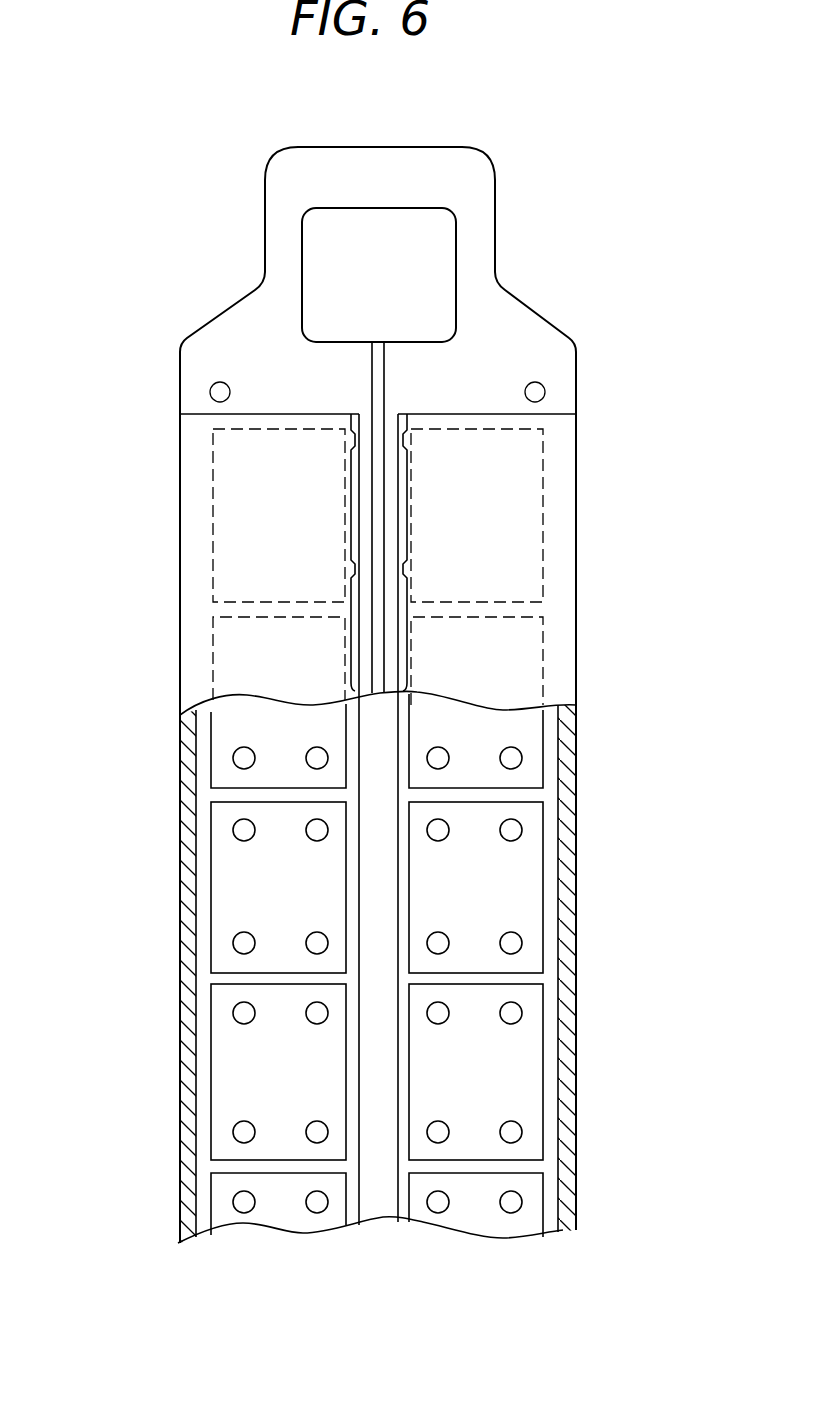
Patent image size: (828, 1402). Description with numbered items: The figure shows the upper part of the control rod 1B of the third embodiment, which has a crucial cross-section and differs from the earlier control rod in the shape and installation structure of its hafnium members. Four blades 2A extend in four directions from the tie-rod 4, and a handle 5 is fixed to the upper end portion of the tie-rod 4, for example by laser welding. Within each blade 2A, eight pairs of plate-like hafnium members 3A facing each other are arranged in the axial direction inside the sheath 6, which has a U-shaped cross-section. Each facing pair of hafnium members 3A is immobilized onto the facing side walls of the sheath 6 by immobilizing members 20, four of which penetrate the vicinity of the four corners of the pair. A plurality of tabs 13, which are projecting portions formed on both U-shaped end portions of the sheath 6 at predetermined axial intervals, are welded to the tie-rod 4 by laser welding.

The control rod 1B is at (552, 250).
The blade 2A is at (565, 803).
The hafnium member 3A is at (212, 740).
The tie-rod 4 is at (365, 653).
The handle 5 is at (267, 305).
The sheath 6 is at (558, 460).
The tab 13 is at (355, 443).
The immobilizing member 20 is at (233, 834).